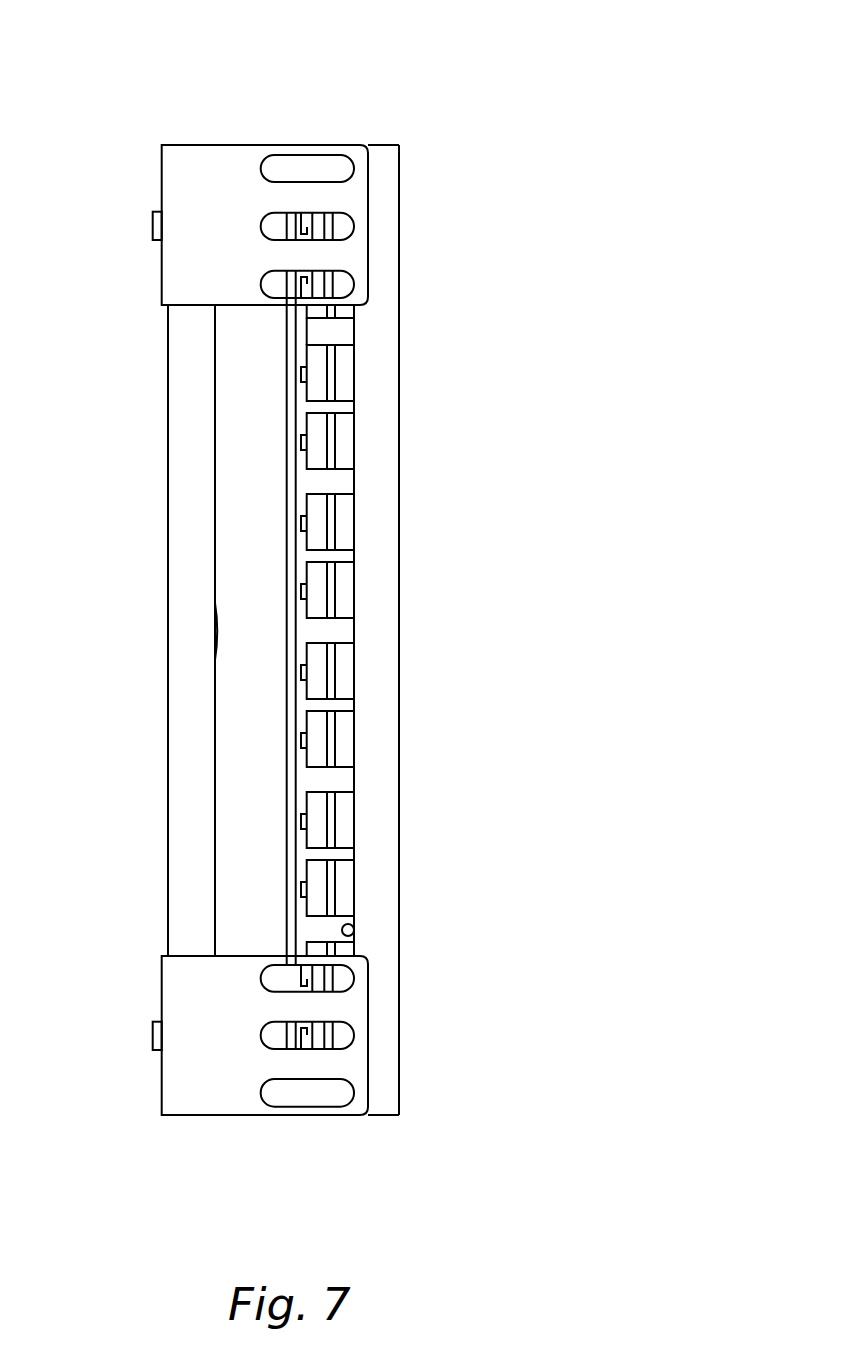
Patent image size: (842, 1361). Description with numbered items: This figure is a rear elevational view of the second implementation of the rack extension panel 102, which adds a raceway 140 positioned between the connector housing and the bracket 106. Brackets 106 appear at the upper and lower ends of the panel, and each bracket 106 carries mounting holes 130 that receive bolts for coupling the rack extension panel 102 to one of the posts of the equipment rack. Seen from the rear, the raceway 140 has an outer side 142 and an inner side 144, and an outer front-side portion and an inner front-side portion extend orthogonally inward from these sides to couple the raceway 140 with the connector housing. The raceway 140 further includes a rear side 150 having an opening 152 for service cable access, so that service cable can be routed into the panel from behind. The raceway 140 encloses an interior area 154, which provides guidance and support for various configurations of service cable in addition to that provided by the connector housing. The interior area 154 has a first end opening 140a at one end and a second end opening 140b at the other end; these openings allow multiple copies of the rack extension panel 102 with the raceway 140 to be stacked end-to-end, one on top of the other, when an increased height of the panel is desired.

The rack extension panel 102 is at (575, 63).
The bracket 106 is at (185, 183).
The mounting holes 130 is at (354, 168).
The raceway 140 is at (316, 113).
The first end opening 140a is at (277, 1143).
The second end opening 140b is at (281, 121).
The outer side 142 is at (168, 668).
The inner side 144 is at (400, 787).
The rear side 150 is at (190, 436).
The opening 152 is at (215, 758).
The interior area 154 is at (238, 522).